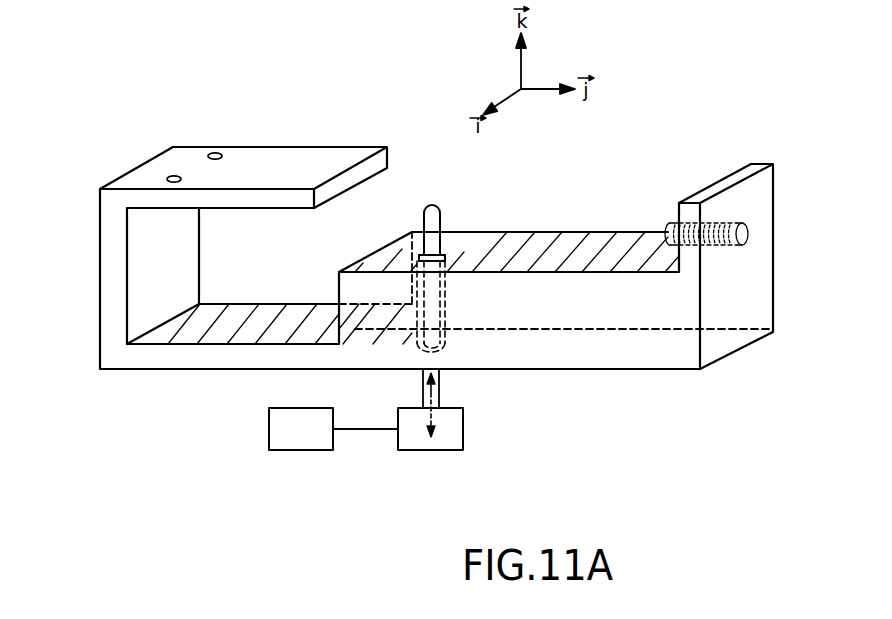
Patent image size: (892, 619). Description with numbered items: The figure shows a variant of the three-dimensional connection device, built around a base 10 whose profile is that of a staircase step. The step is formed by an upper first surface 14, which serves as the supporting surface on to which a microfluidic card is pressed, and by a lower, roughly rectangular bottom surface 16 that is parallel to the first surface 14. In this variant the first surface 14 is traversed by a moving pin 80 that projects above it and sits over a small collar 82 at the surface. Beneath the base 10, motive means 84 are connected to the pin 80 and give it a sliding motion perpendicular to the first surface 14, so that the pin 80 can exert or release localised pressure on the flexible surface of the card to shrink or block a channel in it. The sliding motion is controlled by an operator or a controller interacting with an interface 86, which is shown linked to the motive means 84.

The base 10 is at (647, 355).
The first surface 14 is at (616, 246).
The bottom surface 16 is at (208, 325).
The moving pin 80 is at (444, 221).
The collar / flange 82 is at (444, 254).
The motive means 84 is at (452, 423).
The interface 86 is at (333, 429).